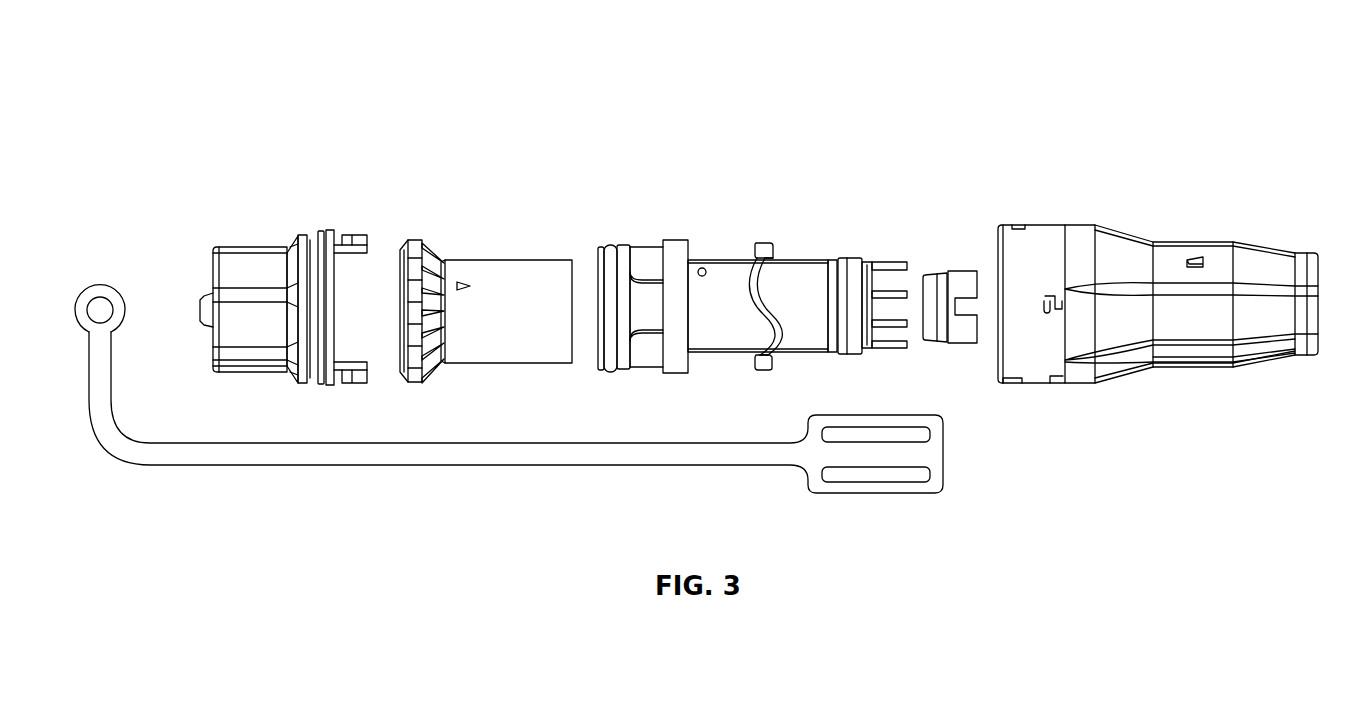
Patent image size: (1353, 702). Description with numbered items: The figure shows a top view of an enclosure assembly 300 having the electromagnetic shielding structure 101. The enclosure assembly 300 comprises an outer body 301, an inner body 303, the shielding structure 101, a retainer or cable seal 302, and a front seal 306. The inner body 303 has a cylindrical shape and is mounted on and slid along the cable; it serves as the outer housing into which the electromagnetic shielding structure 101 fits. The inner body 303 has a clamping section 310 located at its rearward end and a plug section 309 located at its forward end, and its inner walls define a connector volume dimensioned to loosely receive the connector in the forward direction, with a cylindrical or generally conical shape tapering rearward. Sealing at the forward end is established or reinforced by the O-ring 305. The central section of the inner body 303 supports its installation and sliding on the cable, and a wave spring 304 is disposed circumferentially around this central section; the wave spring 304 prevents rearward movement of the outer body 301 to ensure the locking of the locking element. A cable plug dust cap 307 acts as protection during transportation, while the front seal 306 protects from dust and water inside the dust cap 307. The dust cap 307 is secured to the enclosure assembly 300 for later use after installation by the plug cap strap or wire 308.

The enclosure assembly 300 is at (924, 130).
The outer body 301 is at (1130, 221).
The retainer or cable seal 302 is at (948, 261).
The inner body 303 is at (850, 249).
The wave spring 304 is at (764, 234).
The O-ring 305 is at (612, 235).
The front seal 306 is at (324, 222).
The cable plug dust cap 307 is at (253, 235).
The plug cap strap or wire 308 is at (102, 274).
The plug section 309 is at (676, 374).
The clamping section 310 is at (887, 352).
The electromagnetic shielding structure 101 is at (508, 260).